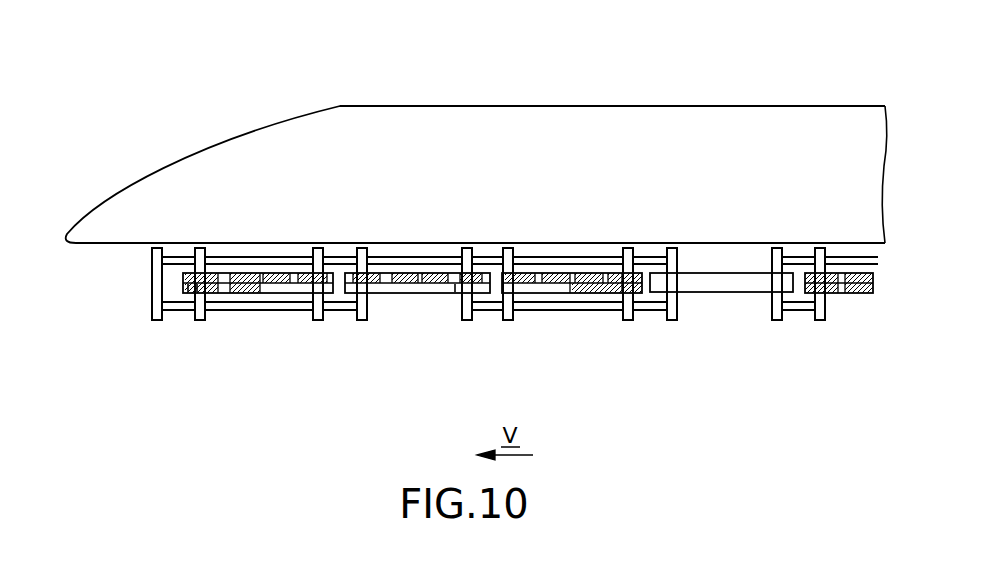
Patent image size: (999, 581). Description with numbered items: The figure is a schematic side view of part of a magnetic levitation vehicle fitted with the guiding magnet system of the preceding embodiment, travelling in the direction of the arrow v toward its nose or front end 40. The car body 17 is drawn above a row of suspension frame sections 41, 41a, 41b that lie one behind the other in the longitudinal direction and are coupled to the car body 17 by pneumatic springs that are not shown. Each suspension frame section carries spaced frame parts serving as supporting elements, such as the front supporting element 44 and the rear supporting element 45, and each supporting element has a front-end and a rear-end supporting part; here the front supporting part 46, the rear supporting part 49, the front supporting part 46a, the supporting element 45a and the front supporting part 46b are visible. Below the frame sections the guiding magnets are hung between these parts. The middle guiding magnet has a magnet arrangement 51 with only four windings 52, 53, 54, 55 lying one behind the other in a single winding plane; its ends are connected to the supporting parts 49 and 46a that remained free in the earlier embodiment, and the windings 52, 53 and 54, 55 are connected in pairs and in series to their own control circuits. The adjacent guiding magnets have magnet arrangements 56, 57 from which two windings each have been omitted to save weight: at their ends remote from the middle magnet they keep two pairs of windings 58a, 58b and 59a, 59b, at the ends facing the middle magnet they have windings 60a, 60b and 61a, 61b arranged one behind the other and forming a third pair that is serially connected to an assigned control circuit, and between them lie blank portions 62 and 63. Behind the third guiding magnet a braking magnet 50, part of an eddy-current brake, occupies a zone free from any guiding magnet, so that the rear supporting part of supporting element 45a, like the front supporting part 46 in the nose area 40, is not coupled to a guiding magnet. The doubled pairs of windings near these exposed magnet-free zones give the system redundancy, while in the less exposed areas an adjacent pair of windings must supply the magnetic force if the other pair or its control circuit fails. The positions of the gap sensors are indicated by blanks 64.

The car body 17 is at (876, 127).
The nose 40 is at (108, 210).
The suspension frame section 41 is at (232, 240).
The suspension frame section 41a is at (567, 240).
The suspension frame section 41b is at (852, 241).
The front supporting element 44 is at (173, 280).
The rear supporting element 45 is at (318, 300).
The supporting element 45a is at (643, 300).
The front-end supporting part 46 is at (152, 310).
The front supporting part 46a is at (465, 312).
The front supporting part 46b is at (792, 300).
The rear supporting part 49 is at (362, 305).
The braking magnet 50 is at (720, 282).
The magnet arrangement 51 is at (396, 297).
The winding 52 is at (352, 273).
The winding 53 is at (400, 273).
The winding 54 is at (437, 273).
The winding 55 is at (475, 273).
The magnet arrangement 56 is at (278, 304).
The magnet arrangement 57 is at (569, 300).
The winding 58a is at (218, 293).
The winding 58b is at (243, 274).
The winding 59a is at (600, 300).
The winding 59b is at (617, 285).
The winding 60a is at (275, 274).
The winding 60b is at (310, 274).
The winding 61a is at (538, 273).
The winding 61b is at (603, 273).
The blank portion 62 is at (282, 293).
The blank portion 63 is at (537, 293).
The blank 64 is at (197, 293).